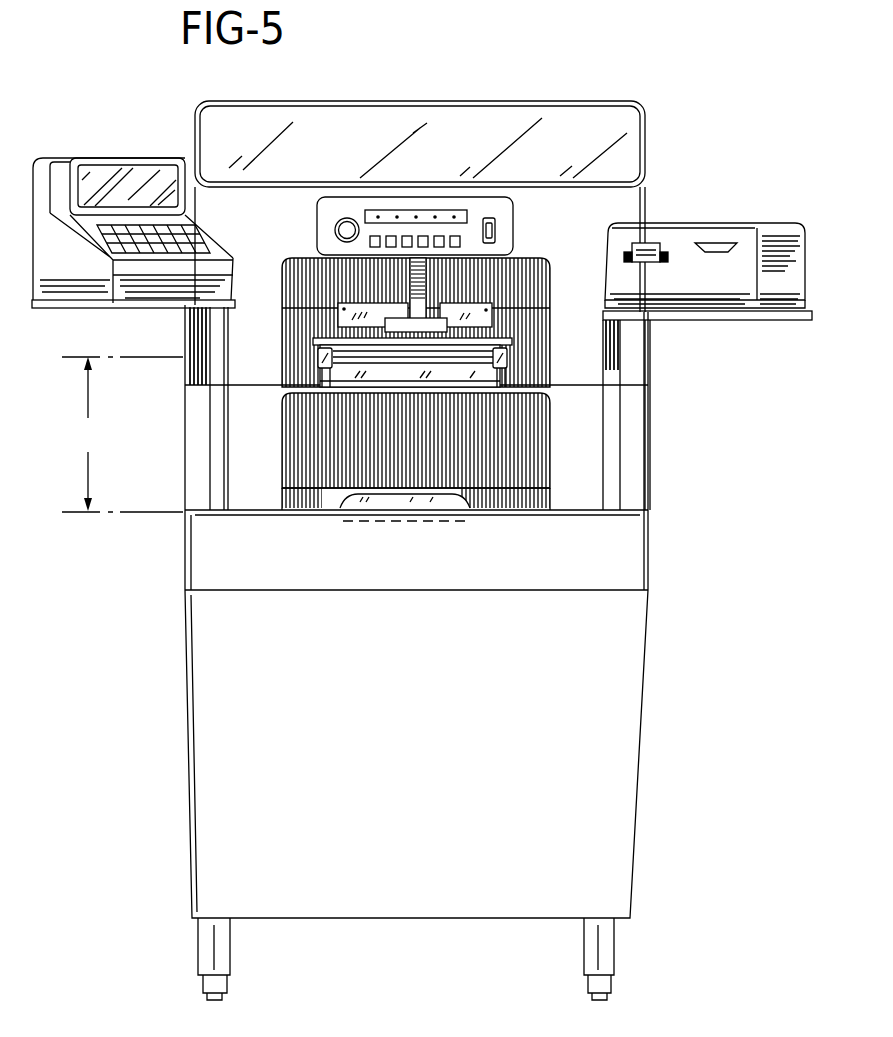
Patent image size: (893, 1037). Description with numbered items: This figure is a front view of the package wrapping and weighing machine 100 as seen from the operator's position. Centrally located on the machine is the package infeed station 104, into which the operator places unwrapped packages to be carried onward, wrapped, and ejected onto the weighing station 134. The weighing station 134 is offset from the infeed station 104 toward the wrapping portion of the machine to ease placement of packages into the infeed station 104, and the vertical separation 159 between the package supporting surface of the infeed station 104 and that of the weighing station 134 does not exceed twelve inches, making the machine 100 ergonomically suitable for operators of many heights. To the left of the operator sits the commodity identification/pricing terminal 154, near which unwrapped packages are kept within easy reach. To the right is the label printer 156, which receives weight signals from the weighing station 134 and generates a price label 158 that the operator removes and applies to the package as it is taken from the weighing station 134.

The package wrapping and weighing machine 100 is at (432, 656).
The package infeed station 104 is at (321, 437).
The weighing station 134 is at (490, 340).
The commodity identification/pricing terminal 154 is at (62, 172).
The label printer 156 is at (685, 234).
The price label 158 is at (651, 252).
The vertical separation 159 is at (122, 434).